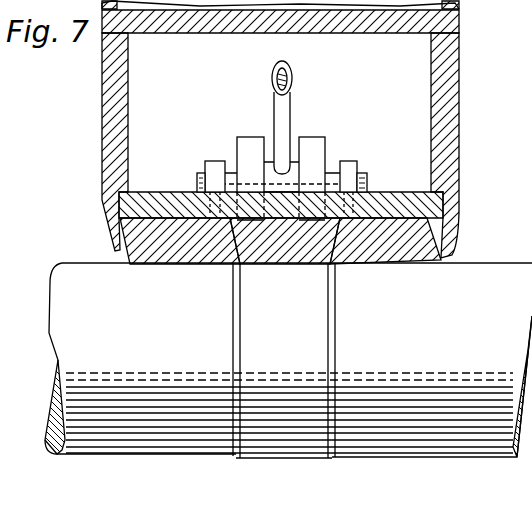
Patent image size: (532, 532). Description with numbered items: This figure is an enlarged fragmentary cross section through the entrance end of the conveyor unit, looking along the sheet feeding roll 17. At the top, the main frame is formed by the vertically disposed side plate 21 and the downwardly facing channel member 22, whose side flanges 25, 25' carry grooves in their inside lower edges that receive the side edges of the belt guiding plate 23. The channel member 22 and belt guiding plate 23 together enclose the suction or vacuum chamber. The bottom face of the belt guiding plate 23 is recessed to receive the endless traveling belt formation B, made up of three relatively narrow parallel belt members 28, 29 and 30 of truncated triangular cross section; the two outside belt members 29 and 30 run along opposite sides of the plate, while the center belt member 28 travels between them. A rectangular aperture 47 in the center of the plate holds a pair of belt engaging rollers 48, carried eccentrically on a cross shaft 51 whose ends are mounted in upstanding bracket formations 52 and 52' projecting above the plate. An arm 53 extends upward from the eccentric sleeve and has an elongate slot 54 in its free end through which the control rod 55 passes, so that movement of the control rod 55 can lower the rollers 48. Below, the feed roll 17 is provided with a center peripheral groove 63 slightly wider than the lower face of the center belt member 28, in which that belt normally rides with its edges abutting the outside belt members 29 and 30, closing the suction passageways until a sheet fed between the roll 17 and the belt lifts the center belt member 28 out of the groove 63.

The sheet feeding roll 17 is at (288, 346).
The side plate 21 is at (460, 10).
The channel member 22 is at (455, 73).
The belt guiding plate 23 is at (394, 193).
The side flange 25 is at (463, 145).
The side flange 25' is at (96, 142).
The center belt member 28 is at (278, 255).
The outside belt member 29 is at (184, 250).
The outside belt member 30 is at (396, 252).
The rectangular aperture 47 is at (203, 162).
The belt engaging roller 48 is at (253, 143).
The cross shaft 51 is at (363, 178).
The upstanding bracket formation 52 is at (355, 169).
The upstanding bracket formation 52' is at (209, 168).
The arm 53 is at (288, 107).
The elongate slot 54 is at (277, 68).
The control rod 55 is at (287, 73).
The center peripheral groove 63 is at (318, 328).
The endless traveling belt formation B is at (113, 257).